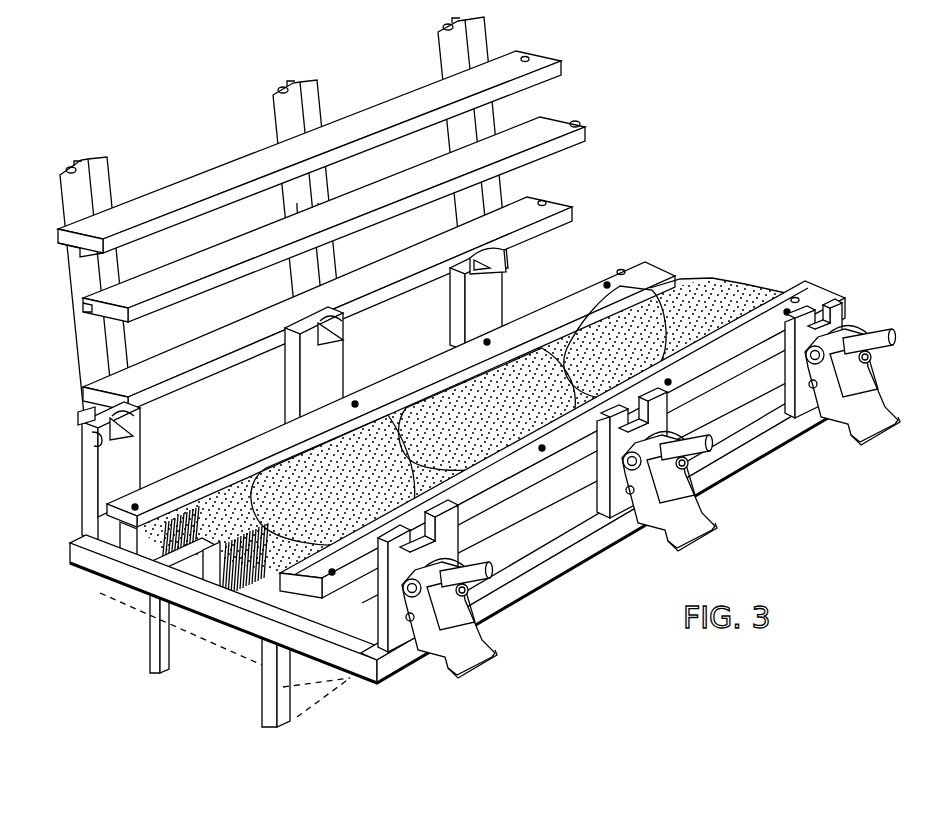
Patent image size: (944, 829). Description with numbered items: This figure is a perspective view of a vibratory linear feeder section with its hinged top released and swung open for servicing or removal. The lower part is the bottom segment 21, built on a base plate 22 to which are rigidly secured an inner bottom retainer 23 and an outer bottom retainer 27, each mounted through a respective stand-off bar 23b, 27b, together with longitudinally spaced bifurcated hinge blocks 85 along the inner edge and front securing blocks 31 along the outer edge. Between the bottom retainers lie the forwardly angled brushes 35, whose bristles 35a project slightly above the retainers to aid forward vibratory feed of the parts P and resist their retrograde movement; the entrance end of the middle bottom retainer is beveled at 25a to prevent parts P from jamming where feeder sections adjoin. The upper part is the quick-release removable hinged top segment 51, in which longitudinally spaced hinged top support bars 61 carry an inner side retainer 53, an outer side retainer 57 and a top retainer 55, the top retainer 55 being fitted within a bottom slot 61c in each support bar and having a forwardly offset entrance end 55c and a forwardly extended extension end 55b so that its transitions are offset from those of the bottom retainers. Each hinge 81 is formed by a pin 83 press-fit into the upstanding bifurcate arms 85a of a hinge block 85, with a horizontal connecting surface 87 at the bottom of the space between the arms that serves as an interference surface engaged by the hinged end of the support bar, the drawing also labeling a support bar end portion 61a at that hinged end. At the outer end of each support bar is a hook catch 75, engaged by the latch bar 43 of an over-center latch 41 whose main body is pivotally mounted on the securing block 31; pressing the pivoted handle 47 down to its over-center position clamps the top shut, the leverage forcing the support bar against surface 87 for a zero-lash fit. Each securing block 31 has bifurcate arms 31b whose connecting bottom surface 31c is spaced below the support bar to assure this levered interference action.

The bottom segment 21 is at (474, 473).
The base plate 22 is at (567, 563).
The inner bottom retainer 23 is at (617, 277).
The stand-off bar 23b is at (127, 543).
The beveled entrance end 25a is at (165, 614).
The outer bottom retainer 27 is at (487, 497).
The stand-off bar 27b is at (275, 673).
The securing block 31 is at (628, 460).
The bifurcate arms 31b is at (840, 310).
The connecting bottom surface 31c is at (818, 317).
The forwardly angled brushes 35 is at (700, 278).
The bristles 35a is at (183, 558).
The over-center latch 41 is at (651, 517).
The latch bar 43 is at (477, 560).
The over-center pivoted handle 47 is at (450, 677).
The hinged top segment 51 is at (336, 218).
The inner side retainer 53 is at (285, 310).
The top retainer 55 is at (336, 228).
The forwardly extended extension end 55b is at (588, 122).
The forwardly offset entrance end 55c is at (95, 310).
The outer side retainer 57 is at (213, 175).
The hinged top support bar 61 is at (284, 218).
The upright foot hinge 61a is at (140, 417).
The bottom slot 61c is at (307, 218).
The hook catch 75 is at (92, 157).
The hinge 81 is at (513, 257).
The pin 83 is at (80, 417).
The bifurcated hinge block 85 is at (312, 395).
The bifurcate arms 85a is at (100, 430).
The horizontal connecting surface 87 is at (286, 372).
The parts P is at (410, 385).